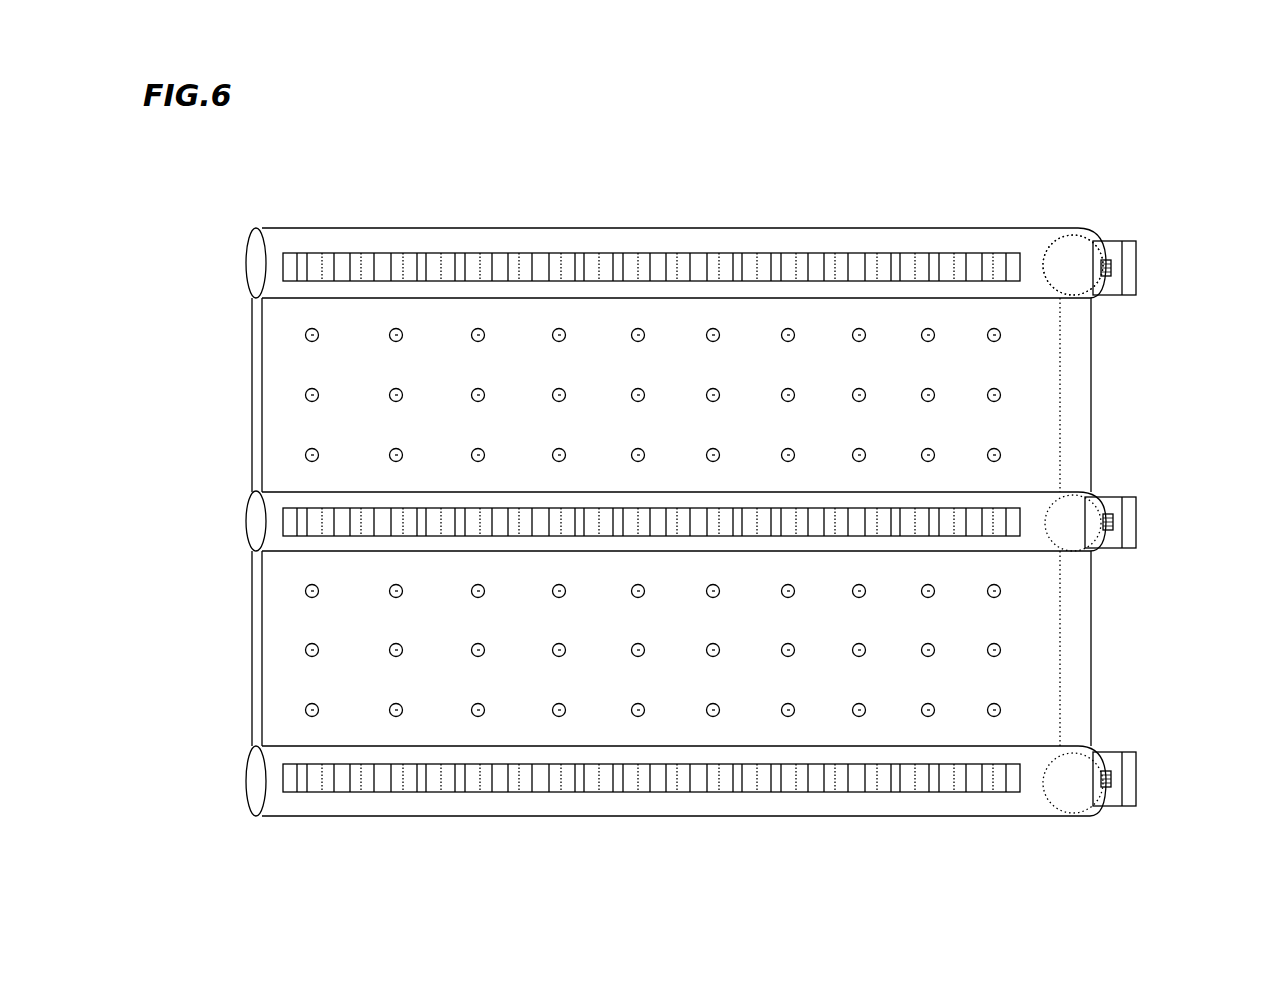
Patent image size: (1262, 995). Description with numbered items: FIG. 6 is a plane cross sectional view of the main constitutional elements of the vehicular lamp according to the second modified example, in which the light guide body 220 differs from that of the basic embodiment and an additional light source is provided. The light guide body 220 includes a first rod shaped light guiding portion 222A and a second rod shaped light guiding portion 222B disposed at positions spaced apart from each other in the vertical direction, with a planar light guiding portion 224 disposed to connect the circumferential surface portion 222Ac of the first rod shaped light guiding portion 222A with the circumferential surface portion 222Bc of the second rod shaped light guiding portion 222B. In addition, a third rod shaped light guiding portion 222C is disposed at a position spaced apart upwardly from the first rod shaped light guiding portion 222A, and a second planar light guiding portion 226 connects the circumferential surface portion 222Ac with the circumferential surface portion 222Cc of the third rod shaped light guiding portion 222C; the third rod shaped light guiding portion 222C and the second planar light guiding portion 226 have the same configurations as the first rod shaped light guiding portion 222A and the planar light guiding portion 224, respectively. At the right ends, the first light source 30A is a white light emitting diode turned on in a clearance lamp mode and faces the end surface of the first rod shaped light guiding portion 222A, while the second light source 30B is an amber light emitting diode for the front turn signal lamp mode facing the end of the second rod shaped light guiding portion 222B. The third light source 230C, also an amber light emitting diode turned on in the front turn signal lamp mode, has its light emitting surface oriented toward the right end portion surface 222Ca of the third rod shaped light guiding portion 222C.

The light guide body 220 is at (553, 208).
The third rod shaped light guiding portion 222C is at (305, 226).
The circumferential surface portion 222Cc is at (737, 248).
The right end portion surface 222Ca is at (1078, 232).
The third light source 230C is at (1108, 248).
The second planar light guiding portion 226 is at (1092, 378).
The first rod shaped light guiding portion 222A is at (305, 488).
The circumferential surface portion 222Ac is at (737, 500).
The first light source 30A is at (1108, 505).
The planar light guiding portion 224 is at (1092, 632).
The second rod shaped light guiding portion 222B is at (305, 742).
The circumferential surface portion 222Bc is at (737, 752).
The second light source 30B is at (1108, 758).